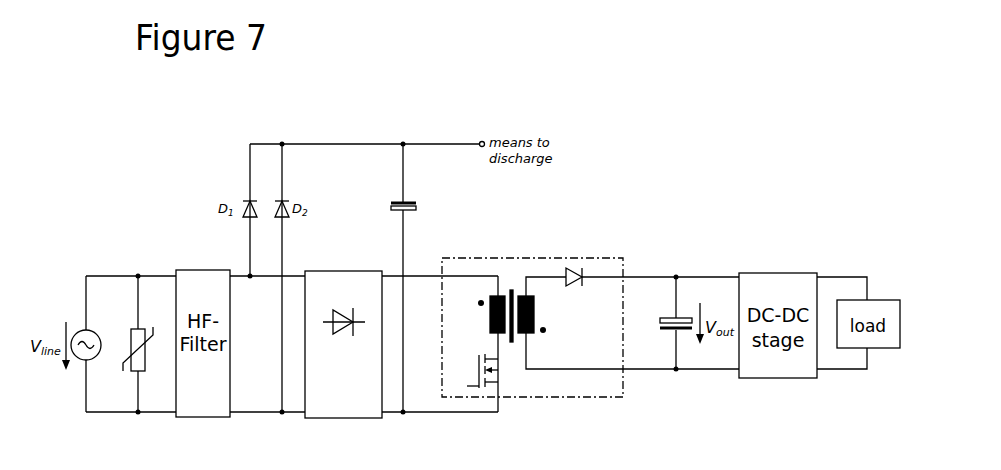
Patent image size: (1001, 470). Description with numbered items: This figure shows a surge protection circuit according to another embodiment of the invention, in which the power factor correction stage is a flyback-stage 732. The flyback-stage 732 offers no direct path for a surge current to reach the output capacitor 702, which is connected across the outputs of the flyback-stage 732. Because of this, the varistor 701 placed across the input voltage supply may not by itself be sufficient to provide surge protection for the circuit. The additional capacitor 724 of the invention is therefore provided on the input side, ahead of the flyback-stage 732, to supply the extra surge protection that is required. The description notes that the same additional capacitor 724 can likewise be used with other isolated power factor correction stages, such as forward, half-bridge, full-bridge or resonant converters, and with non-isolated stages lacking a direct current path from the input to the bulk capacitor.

The varistor 701 is at (137, 327).
The capacitor C2 724 is at (407, 200).
The flyback-stage 732 is at (600, 252).
The output capacitor 702 is at (678, 318).